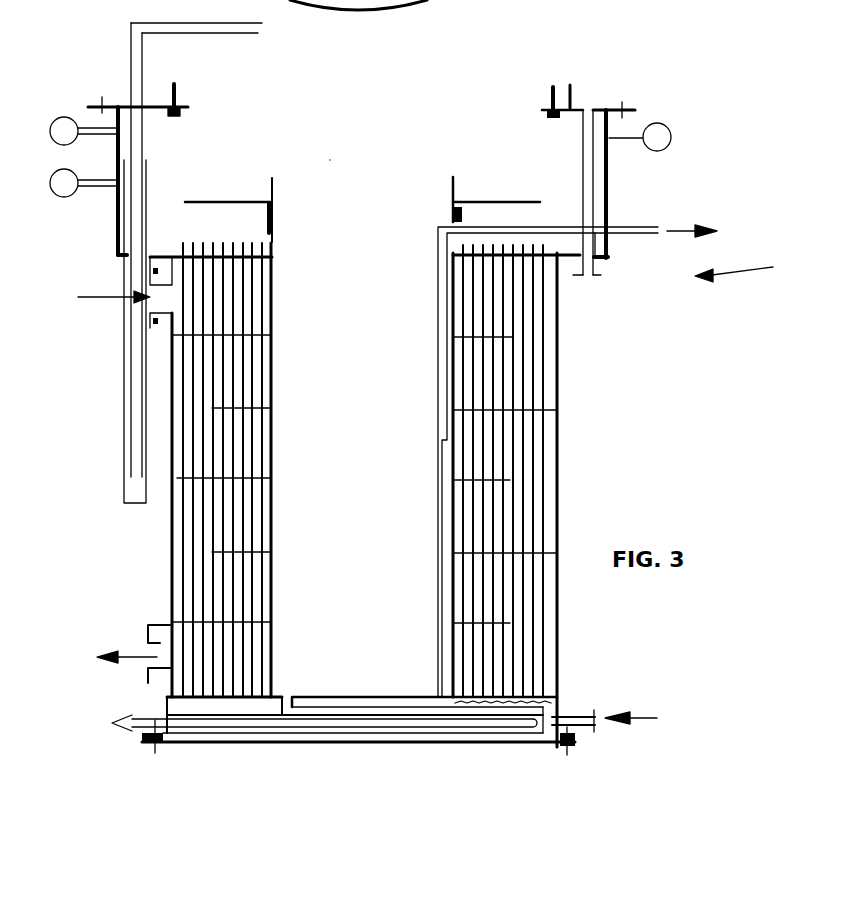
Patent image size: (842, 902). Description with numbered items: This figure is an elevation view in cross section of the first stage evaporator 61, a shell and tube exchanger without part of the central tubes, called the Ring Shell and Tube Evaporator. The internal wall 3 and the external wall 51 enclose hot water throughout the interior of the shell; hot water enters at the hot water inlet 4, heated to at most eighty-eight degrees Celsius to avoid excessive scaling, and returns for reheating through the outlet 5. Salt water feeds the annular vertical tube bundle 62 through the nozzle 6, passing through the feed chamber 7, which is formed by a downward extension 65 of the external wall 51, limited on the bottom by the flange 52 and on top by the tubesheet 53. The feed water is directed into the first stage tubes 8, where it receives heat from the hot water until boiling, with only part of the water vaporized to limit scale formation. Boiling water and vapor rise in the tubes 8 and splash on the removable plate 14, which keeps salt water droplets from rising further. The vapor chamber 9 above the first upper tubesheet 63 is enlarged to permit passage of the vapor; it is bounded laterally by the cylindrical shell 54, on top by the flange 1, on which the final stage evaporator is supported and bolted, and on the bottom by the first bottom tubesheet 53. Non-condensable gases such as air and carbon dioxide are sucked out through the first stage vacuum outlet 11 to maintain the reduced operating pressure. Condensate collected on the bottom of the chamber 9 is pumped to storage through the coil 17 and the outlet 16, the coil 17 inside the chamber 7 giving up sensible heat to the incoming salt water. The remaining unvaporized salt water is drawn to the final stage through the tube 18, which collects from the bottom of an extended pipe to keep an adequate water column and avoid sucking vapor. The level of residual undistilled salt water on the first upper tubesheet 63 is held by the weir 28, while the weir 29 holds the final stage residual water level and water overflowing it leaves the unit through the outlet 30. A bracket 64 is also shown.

The flange 1 is at (158, 100).
The internal wall 3 is at (215, 470).
The hot water inlet 4 is at (106, 297).
The outlet 5 is at (116, 656).
The nozzle 6 is at (614, 719).
The feed chamber 7 is at (218, 710).
The first stage tubes 8 is at (205, 445).
The vapor chamber 9 is at (346, 158).
The first stage vacuum outlet 11 is at (593, 458).
The plate 14 is at (480, 200).
The outlet 16 is at (122, 719).
The coil 17 is at (337, 726).
The tube 18 is at (140, 60).
The weir 28 is at (162, 248).
The weir 29 is at (575, 95).
The outlet 30 is at (592, 283).
The external wall 51 is at (560, 497).
The flange 52 is at (507, 747).
The tubesheet 53 is at (317, 697).
The cylindrical shell 54 is at (117, 203).
The first stage evaporator 61 is at (755, 267).
The annular vertical tube bundle 62 is at (545, 442).
The first upper tubesheet 63 is at (552, 253).
The bracket 64 is at (272, 233).
The downward extension 65 is at (160, 706).